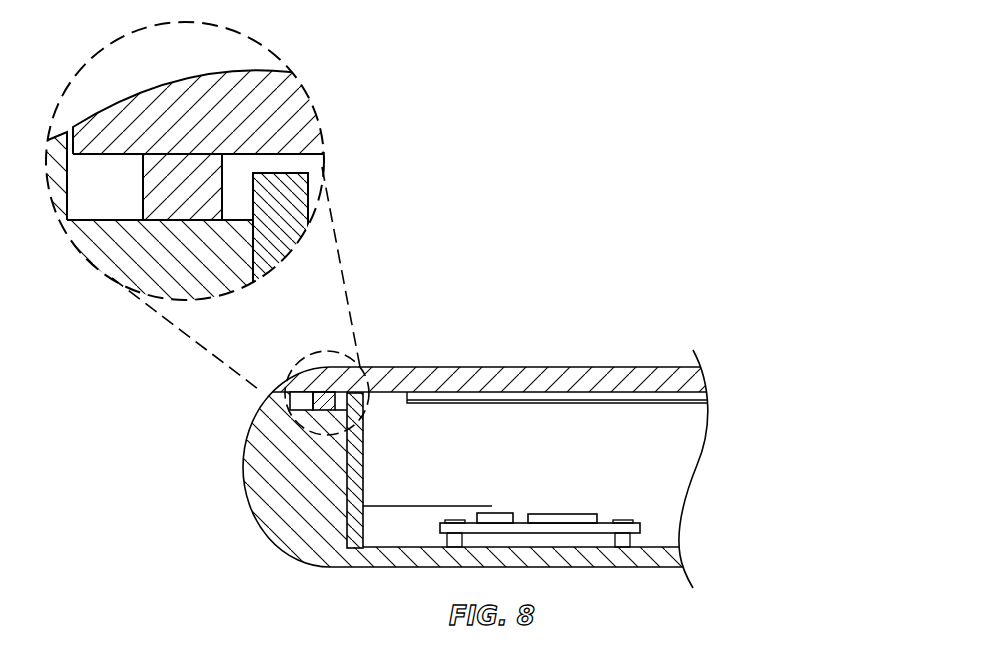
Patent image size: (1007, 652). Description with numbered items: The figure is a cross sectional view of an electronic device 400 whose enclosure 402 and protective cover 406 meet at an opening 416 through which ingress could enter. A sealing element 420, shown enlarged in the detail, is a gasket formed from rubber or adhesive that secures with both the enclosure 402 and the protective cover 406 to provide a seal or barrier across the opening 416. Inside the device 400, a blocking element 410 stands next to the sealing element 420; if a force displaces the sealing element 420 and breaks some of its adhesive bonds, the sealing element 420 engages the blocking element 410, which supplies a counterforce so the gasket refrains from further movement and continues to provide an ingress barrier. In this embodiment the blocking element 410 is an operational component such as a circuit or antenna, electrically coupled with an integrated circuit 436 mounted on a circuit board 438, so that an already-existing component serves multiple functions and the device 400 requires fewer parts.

The electronic device 400 is at (481, 409).
The enclosure 402 is at (170, 266).
The protective cover 406 is at (182, 131).
The blocking element 410 is at (363, 455).
The opening 416 is at (78, 96).
The sealing element 420 is at (222, 170).
The integrated circuit 436 is at (498, 513).
The circuit board 438 is at (604, 522).